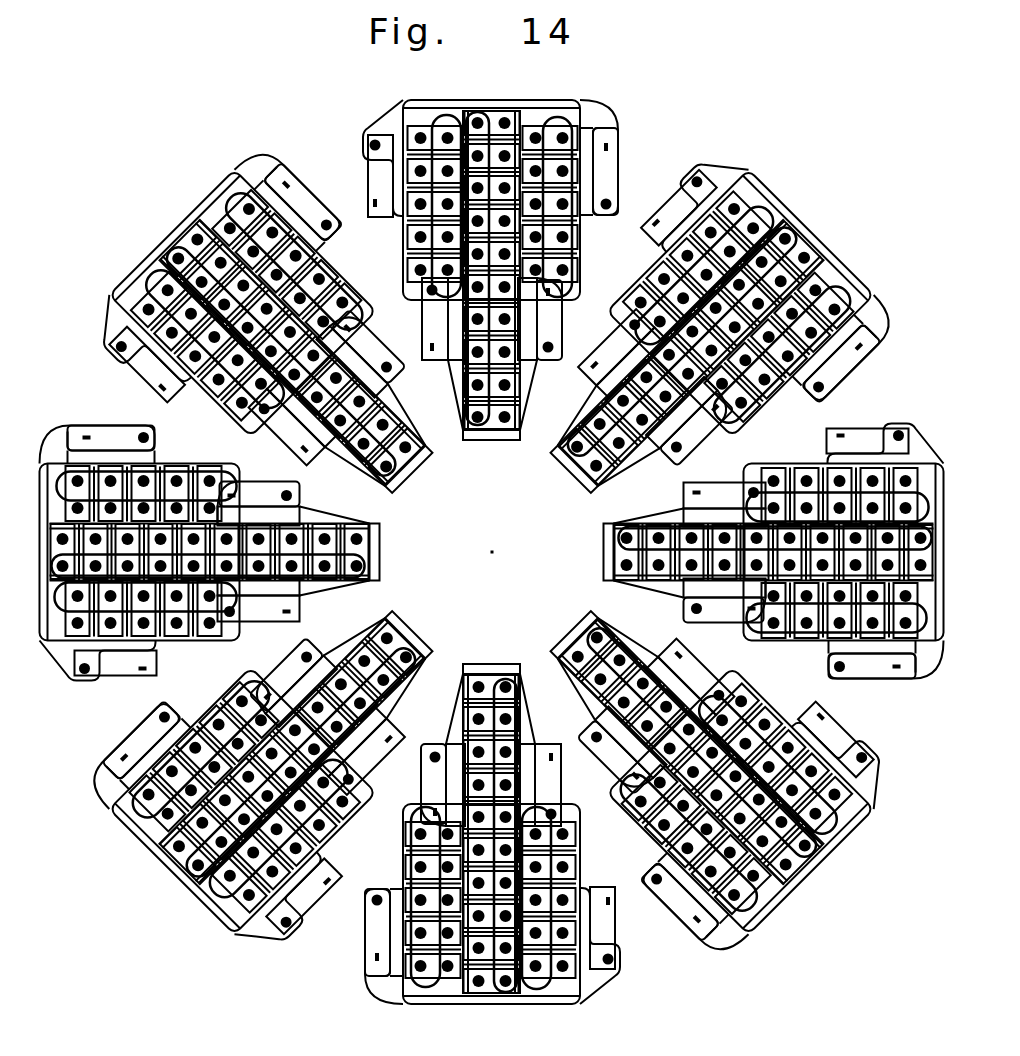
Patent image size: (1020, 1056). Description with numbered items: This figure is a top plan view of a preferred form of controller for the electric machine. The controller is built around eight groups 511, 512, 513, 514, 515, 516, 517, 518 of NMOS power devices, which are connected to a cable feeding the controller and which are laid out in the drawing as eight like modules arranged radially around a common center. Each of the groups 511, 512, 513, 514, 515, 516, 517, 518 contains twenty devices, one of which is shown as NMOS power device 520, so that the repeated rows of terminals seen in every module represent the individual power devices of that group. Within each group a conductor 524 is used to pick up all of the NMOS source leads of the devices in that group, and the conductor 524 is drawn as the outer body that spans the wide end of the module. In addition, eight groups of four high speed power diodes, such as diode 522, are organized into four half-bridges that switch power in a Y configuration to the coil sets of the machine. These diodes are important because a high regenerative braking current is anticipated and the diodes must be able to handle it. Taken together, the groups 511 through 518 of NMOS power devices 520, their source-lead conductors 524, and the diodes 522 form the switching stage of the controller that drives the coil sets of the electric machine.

The group of NMOS power devices 511 is at (442, 100).
The group of NMOS power devices 512 is at (780, 187).
The group of NMOS power devices 513 is at (807, 466).
The group of NMOS power devices 514 is at (580, 611).
The group of NMOS power devices 515 is at (492, 654).
The group of NMOS power devices 516 is at (448, 588).
The group of NMOS power devices 517 is at (389, 533).
The group of NMOS power devices 518 is at (411, 472).
The NMOS power device 520 is at (575, 270).
The high speed power diode 522 is at (622, 155).
The conductor 524 is at (597, 107).